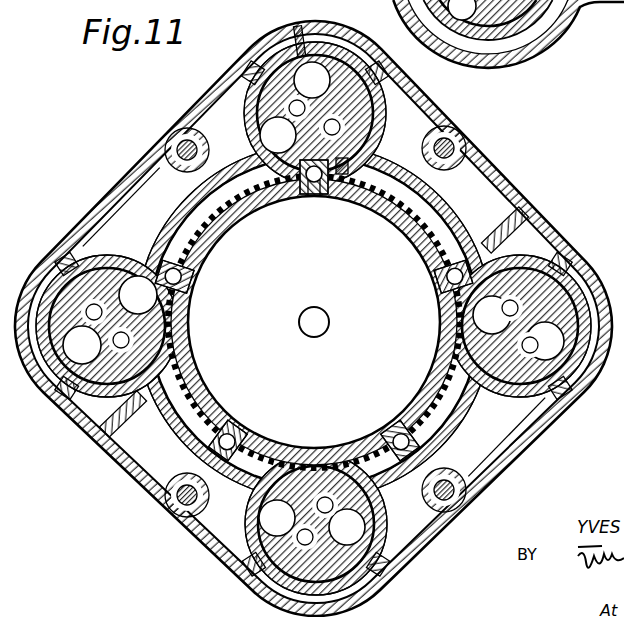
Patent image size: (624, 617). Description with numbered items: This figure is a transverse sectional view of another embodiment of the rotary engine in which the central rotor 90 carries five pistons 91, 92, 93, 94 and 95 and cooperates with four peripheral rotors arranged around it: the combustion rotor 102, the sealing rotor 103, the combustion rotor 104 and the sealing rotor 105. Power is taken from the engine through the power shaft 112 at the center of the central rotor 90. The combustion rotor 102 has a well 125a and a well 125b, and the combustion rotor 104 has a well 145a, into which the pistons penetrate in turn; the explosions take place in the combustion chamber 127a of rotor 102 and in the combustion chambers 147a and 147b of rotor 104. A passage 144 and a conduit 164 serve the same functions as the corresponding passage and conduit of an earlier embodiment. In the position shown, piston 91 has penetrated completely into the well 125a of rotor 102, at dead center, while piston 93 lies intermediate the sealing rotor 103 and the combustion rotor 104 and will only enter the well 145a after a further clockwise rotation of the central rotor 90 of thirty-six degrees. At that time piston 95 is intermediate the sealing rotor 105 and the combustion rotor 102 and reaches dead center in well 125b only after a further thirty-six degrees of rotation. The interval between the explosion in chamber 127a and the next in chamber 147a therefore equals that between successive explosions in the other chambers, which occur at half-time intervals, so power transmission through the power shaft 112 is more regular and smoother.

The central rotor 90 is at (238, 222).
The piston 91 is at (327, 186).
The piston 92 is at (441, 281).
The piston 93 is at (400, 425).
The piston 94 is at (238, 428).
The piston 95 is at (194, 274).
The combustion rotor 102 is at (324, 68).
The sealing rotor 103 is at (443, 346).
The combustion rotor 104 is at (392, 588).
The sealing rotor 105 is at (92, 326).
The power shaft 112 is at (326, 311).
The well 125a is at (348, 168).
The well 125b is at (336, 32).
The combustion chamber 127a is at (352, 118).
The passage 144 is at (292, 28).
The well 145a is at (356, 518).
The combustion chamber 147a is at (325, 499).
The combustion chamber 147b is at (262, 527).
The conduit 164 is at (262, 62).